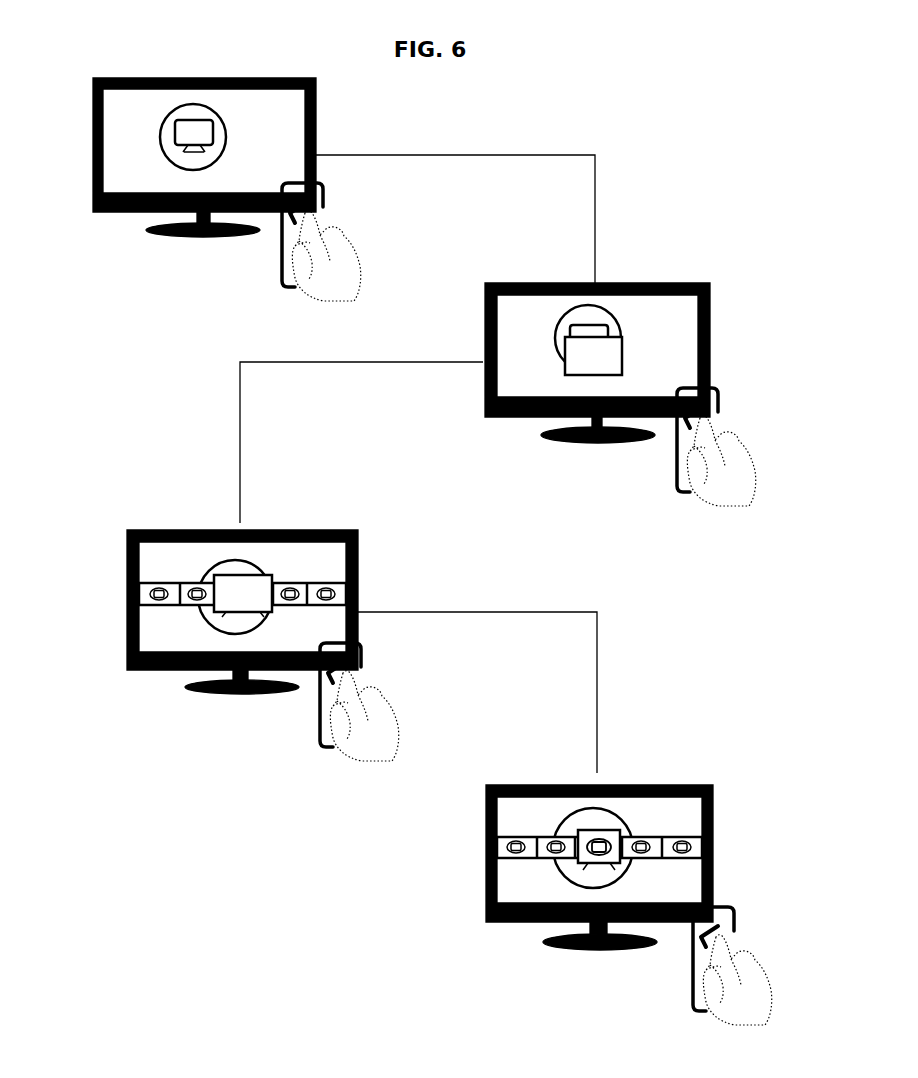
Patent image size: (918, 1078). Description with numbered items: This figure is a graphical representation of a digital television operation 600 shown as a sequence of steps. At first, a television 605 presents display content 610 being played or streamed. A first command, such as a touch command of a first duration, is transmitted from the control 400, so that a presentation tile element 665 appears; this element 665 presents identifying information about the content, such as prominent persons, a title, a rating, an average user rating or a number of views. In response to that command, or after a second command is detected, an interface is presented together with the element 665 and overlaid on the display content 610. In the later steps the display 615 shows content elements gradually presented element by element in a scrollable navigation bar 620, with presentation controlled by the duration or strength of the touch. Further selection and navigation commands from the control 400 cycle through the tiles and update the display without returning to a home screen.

The digital television operation 600 is at (612, 145).
The television 605 is at (92, 140).
The display content 610 is at (170, 112).
The display device (television) showing selection bar 615 is at (128, 540).
The selection bar of content thumbnails 620 is at (162, 608).
The presentation tile element 665 is at (627, 355).
The control 400 is at (325, 203).